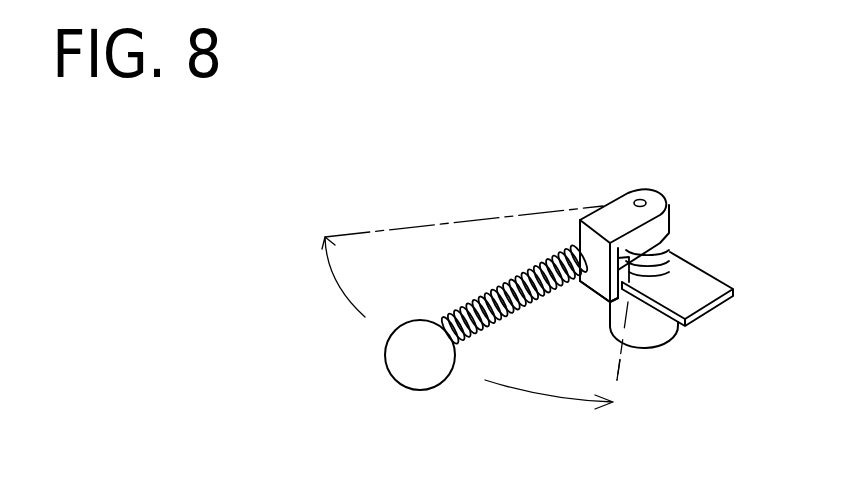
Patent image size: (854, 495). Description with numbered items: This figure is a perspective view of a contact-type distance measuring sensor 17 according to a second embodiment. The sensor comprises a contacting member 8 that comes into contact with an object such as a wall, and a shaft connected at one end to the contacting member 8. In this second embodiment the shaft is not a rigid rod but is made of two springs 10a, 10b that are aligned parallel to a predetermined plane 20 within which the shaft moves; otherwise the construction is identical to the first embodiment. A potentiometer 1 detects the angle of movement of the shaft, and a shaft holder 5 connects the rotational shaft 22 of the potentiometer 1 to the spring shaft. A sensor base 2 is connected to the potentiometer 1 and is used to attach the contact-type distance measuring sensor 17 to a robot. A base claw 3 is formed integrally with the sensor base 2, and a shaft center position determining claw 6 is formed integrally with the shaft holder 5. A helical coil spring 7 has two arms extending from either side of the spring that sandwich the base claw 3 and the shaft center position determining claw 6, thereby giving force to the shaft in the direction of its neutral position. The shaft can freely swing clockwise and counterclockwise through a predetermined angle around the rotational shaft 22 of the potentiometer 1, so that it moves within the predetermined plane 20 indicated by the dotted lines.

The potentiometer 1 is at (660, 333).
The sensor base 2 is at (707, 283).
The base claw 3 is at (608, 302).
The shaft holder 5 is at (609, 222).
The shaft center position determining claw 6 is at (603, 273).
The helical coil spring 7 is at (673, 252).
The contacting member 8 is at (402, 357).
The spring 10a is at (498, 277).
The spring 10b is at (468, 347).
The contact-type distance measuring sensor 17 is at (358, 135).
The predetermined plane 20 is at (620, 382).
The rotational shaft 22 is at (639, 197).